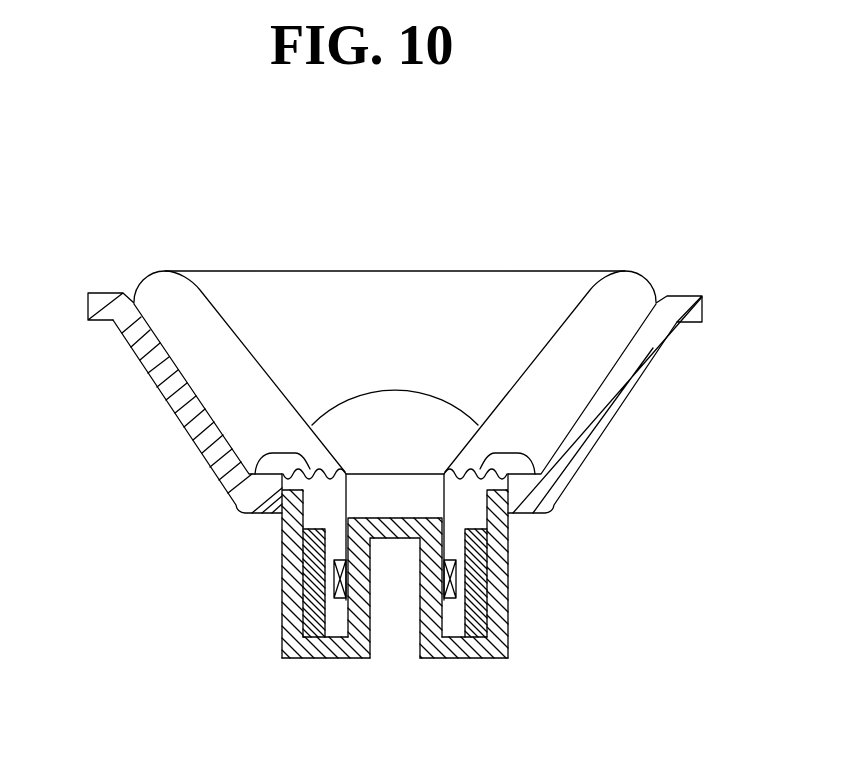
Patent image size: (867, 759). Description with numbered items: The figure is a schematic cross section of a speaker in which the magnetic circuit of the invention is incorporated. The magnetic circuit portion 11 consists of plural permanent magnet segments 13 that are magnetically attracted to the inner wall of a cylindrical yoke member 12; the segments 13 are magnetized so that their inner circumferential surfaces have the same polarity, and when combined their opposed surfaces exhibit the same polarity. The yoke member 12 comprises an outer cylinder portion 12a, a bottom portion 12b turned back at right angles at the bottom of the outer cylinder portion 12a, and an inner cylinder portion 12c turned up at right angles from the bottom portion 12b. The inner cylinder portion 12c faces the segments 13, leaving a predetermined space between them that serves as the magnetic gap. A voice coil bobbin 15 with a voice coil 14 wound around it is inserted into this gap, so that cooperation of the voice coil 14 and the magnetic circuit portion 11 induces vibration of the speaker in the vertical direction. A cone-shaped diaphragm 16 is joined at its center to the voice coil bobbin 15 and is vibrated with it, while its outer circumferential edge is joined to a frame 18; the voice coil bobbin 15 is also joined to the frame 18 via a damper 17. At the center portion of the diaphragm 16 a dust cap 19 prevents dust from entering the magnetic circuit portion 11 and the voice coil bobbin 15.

The magnetic circuit portion 11 is at (393, 612).
The cylindrical yoke member 12 is at (388, 612).
The outer cylinder portion 12a is at (290, 552).
The bottom portion 12b is at (316, 655).
The inner cylinder portion 12c is at (367, 603).
The permanent magnet segments 13 is at (303, 628).
The voice coil 14 is at (337, 580).
The voice coil bobbin 15 is at (347, 503).
The diaphragm 16 is at (520, 378).
The damper 17 is at (243, 457).
The frame 18 is at (137, 337).
The dust cap 19 is at (431, 392).